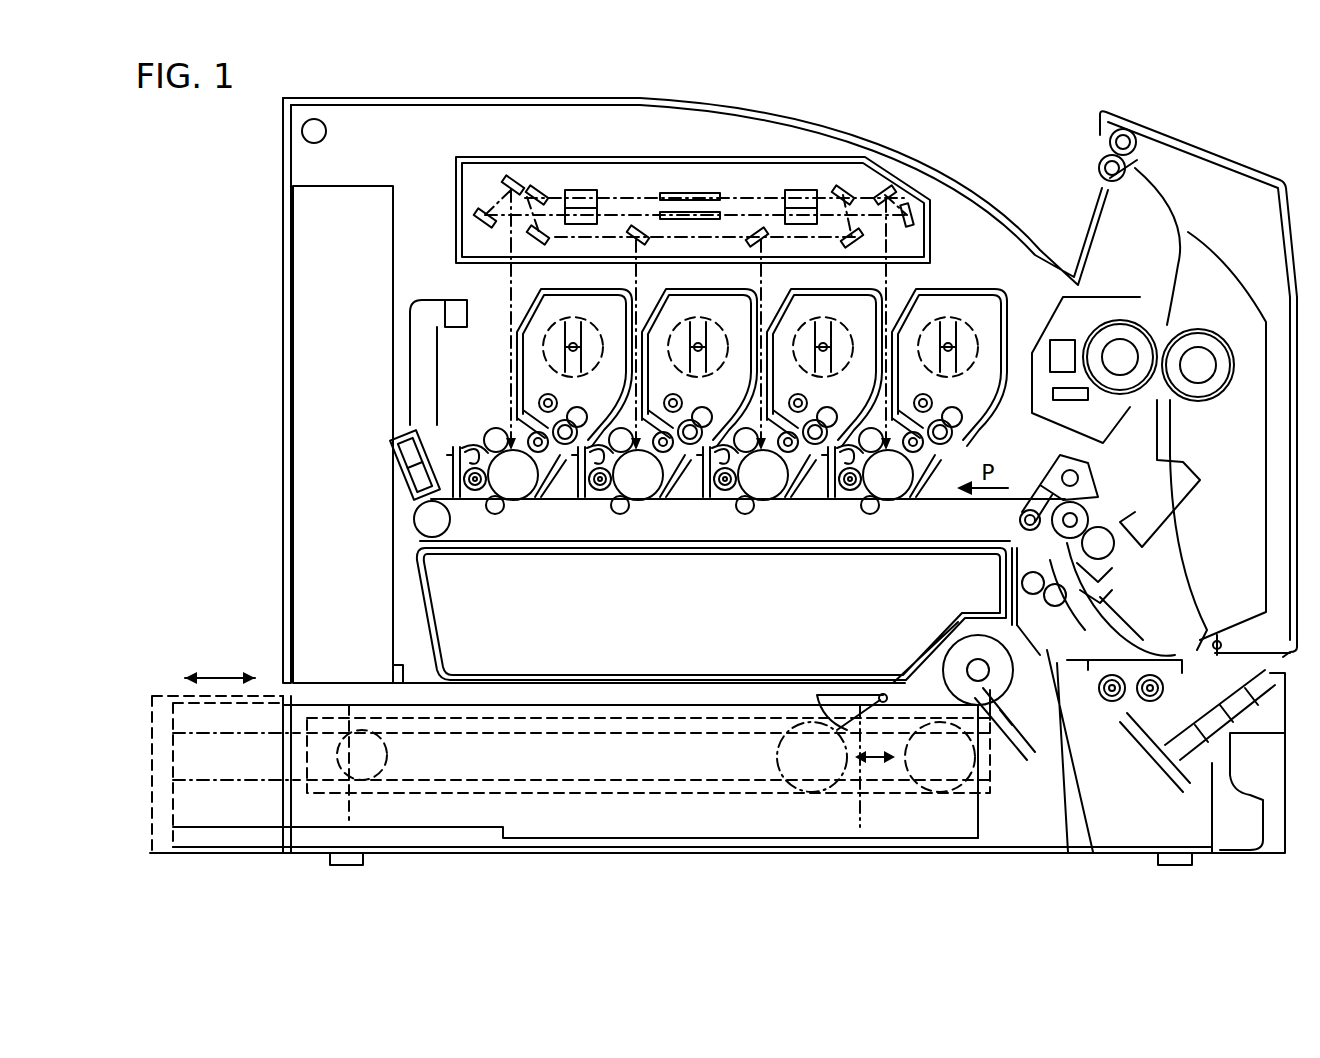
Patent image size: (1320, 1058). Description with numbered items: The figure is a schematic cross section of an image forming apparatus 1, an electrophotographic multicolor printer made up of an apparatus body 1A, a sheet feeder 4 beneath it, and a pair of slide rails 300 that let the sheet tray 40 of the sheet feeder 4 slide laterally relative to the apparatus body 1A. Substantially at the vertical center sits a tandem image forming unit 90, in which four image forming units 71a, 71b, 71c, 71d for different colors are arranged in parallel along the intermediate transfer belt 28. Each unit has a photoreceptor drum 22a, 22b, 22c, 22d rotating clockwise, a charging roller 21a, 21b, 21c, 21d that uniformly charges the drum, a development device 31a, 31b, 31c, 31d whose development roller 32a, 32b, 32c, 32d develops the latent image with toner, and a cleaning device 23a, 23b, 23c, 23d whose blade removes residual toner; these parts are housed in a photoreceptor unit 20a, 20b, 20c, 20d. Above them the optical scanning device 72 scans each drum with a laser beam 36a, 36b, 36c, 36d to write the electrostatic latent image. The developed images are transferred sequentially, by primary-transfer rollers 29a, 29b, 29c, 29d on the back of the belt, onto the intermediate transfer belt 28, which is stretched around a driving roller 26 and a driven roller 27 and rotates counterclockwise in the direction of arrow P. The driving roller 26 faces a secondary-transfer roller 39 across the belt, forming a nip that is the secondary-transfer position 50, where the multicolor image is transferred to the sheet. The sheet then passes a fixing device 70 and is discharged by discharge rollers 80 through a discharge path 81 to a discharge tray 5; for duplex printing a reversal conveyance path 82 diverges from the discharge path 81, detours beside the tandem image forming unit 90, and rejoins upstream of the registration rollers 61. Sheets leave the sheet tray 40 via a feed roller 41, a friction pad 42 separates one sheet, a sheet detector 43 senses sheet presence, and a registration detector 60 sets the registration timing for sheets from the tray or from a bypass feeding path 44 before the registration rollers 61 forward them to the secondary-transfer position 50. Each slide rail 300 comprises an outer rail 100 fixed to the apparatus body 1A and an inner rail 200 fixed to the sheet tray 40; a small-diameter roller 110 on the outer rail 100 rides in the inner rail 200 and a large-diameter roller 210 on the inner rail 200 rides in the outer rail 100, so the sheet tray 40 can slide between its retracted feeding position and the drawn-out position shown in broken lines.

The image forming apparatus 1 is at (802, 103).
The apparatus body 1A is at (462, 100).
The discharge tray 5 is at (912, 162).
The optical scanning device 72 is at (691, 193).
The laser beam 36a is at (888, 242).
The laser beam 36b is at (761, 270).
The laser beam 36c is at (640, 270).
The laser beam 36d is at (505, 245).
The development device 31a is at (949, 355).
The development device 31b is at (824, 355).
The development device 31c is at (699, 355).
The development device 31d is at (558, 300).
The photoreceptor unit 20a is at (860, 345).
The photoreceptor unit 20b is at (735, 345).
The photoreceptor unit 20c is at (610, 345).
The photoreceptor unit 20d is at (511, 312).
The charging roller 21a is at (850, 415).
The charging roller 21b is at (725, 415).
The charging roller 21c is at (600, 415).
The charging roller 21d is at (496, 427).
The photoreceptor drum 22a is at (888, 475).
The photoreceptor drum 22b is at (763, 475).
The photoreceptor drum 22c is at (638, 475).
The photoreceptor drum 22d is at (500, 485).
The cleaning device 23a is at (840, 517).
The cleaning device 23b is at (714, 517).
The cleaning device 23c is at (590, 517).
The cleaning device 23d is at (470, 452).
The primary-transfer roller 29a is at (885, 543).
The primary-transfer roller 29b is at (760, 543).
The primary-transfer roller 29c is at (634, 543).
The primary-transfer roller 29d is at (495, 514).
The development roller 32a is at (963, 438).
The development roller 32b is at (813, 484).
The development roller 32c is at (687, 484).
The development roller 32d is at (540, 452).
The image forming unit 71a is at (944, 495).
The image forming unit 71b is at (792, 495).
The image forming unit 71c is at (667, 495).
The image forming unit 71d is at (553, 485).
The tandem image forming unit 90 is at (511, 359).
The driven roller 27 is at (413, 519).
The driving roller 26 is at (1025, 528).
The intermediate transfer belt 28 is at (925, 548).
The secondary-transfer position 50 is at (1097, 510).
The secondary-transfer roller 39 is at (1114, 553).
The registration rollers 61 is at (1068, 596).
The registration detector 60 is at (1040, 615).
The fixing device 70 is at (1160, 316).
The discharge rollers 80 is at (1098, 167).
The discharge path 81 is at (1176, 250).
The reversal conveyance path 82 is at (1220, 235).
The feed roller 41 is at (945, 682).
The friction pad 42 is at (1005, 735).
The sheet detector 43 is at (838, 695).
The bypass feeding path 44 is at (1090, 690).
The sheet feeder 4 is at (1016, 834).
The sheet tray 40 is at (225, 853).
The slide rail 300 is at (450, 797).
The large-diameter roller 210 is at (388, 757).
The small-diameter roller 110 is at (777, 757).
The inner rail 200 is at (582, 783).
The outer rail 100 is at (686, 798).